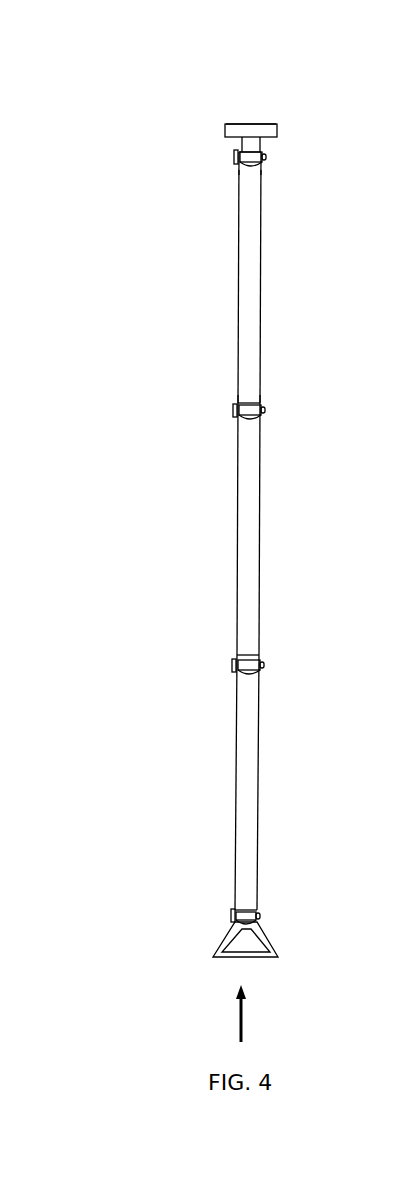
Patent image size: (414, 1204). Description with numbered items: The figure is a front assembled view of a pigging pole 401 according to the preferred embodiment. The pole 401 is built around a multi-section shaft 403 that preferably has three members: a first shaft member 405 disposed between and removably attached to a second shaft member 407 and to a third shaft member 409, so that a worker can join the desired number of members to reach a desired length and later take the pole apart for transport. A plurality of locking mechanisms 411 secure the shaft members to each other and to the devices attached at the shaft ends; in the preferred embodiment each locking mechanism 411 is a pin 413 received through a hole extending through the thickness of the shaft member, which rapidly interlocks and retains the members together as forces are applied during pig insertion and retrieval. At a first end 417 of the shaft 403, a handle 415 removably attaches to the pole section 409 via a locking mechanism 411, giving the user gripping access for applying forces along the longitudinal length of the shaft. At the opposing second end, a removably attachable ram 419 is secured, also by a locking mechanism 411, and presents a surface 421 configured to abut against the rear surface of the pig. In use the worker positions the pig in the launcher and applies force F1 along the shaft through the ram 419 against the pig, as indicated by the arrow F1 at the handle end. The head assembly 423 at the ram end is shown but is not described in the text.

The pigging pole 401 is at (131, 60).
The multi-section shaft 403 is at (142, 548).
The first shaft member 405 is at (238, 502).
The second shaft member 407 is at (239, 241).
The third shaft member 409 is at (237, 791).
The locking mechanism 411 is at (292, 419).
The pin 413 is at (234, 157).
The handle 415 is at (226, 940).
The first end 417 is at (286, 901).
The ram 419 is at (225, 131).
The surface 421 is at (269, 113).
The head assembly 423 is at (294, 178).
The force F1 is at (238, 1015).